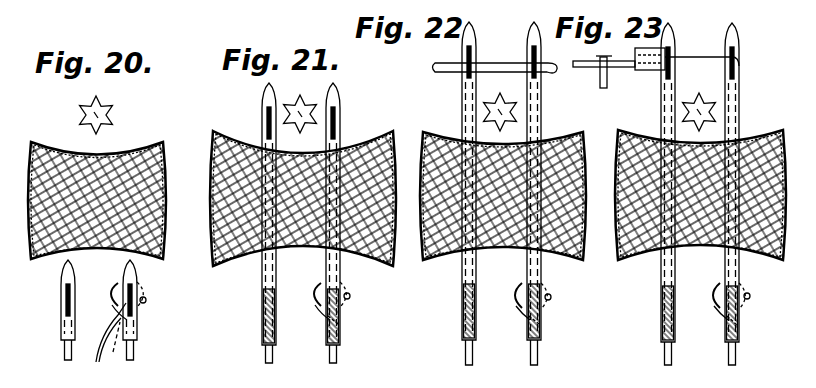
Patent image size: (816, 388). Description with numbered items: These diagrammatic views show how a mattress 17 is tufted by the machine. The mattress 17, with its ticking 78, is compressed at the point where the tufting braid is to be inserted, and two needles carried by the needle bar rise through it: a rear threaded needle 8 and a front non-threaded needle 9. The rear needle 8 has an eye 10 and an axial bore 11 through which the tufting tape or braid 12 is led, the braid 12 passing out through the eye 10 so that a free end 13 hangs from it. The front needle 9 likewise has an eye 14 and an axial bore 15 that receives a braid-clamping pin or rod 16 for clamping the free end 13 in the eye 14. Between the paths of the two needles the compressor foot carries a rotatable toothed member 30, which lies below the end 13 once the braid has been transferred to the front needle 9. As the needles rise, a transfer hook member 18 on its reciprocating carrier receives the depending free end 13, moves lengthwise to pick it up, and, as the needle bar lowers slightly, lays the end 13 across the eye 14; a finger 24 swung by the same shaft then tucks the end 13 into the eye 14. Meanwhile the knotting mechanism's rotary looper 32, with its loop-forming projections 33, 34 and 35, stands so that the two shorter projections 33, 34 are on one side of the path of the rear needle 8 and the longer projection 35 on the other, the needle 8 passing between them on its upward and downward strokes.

In FIG. 20, the rear threaded needle 8 is at (151, 310).
In FIG. 21, the rear threaded needle 8 is at (350, 223).
In FIG. 22, the rear threaded needle 8 is at (551, 193).
In FIG. 23, the rear threaded needle 8 is at (749, 194).
In FIG. 20, the front non-threaded needle 9 is at (48, 310).
In FIG. 21, the front non-threaded needle 9 is at (252, 223).
In FIG. 22, the front non-threaded needle 9 is at (451, 193).
In FIG. 23, the front non-threaded needle 9 is at (660, 194).
In FIG. 20, the eye 10 is at (140, 292).
In FIG. 21, the eye 10 is at (338, 121).
In FIG. 22, the eye 10 is at (540, 47).
In FIG. 23, the eye 10 is at (739, 55).
In FIG. 20, the axial bore 11 is at (115, 346).
In FIG. 21, the axial bore 11 is at (340, 323).
In FIG. 22, the axial bore 11 is at (542, 324).
In FIG. 23, the axial bore 11 is at (740, 326).
In FIG. 20, the tufting tape or braid 12 is at (136, 350).
In FIG. 21, the tufting tape or braid 12 is at (340, 347).
In FIG. 22, the tufting tape or braid 12 is at (540, 351).
In FIG. 23, the tufting tape or braid 12 is at (738, 353).
In FIG. 20, the free end 13 is at (96, 360).
In FIG. 23, the free end 13 is at (705, 57).
In FIG. 20, the eye 14 is at (63, 296).
In FIG. 21, the eye 14 is at (264, 112).
In FIG. 22, the eye 14 is at (465, 54).
In FIG. 23, the eye 14 is at (671, 57).
In FIG. 21, the axial bore 15 is at (263, 304).
In FIG. 23, the axial bore 15 is at (661, 306).
In FIG. 20, the braid-clamping pin or rod 16 is at (65, 350).
In FIG. 21, the braid-clamping pin or rod 16 is at (266, 349).
In FIG. 22, the braid-clamping pin or rod 16 is at (466, 351).
In FIG. 23, the braid-clamping pin or rod 16 is at (664, 353).
In FIG. 20, the mattress 17 is at (88, 200).
In FIG. 21, the mattress 17 is at (299, 203).
In FIG. 22, the mattress 17 is at (502, 198).
In FIG. 23, the mattress 17 is at (697, 201).
In FIG. 22, the transfer hook member 18 is at (497, 64).
In FIG. 23, the transfer hook member 18 is at (602, 76).
In FIG. 23, the finger 24 is at (650, 70).
In FIG. 20, the rotatable toothed member 30 is at (102, 119).
In FIG. 21, the rotatable toothed member 30 is at (301, 104).
In FIG. 22, the rotatable toothed member 30 is at (503, 105).
In FIG. 23, the rotatable toothed member 30 is at (700, 104).
In FIG. 20, the rotary looper 32 is at (143, 283).
In FIG. 21, the rotary looper 32 is at (348, 287).
In FIG. 22, the rotary looper 32 is at (546, 290).
In FIG. 23, the rotary looper 32 is at (745, 291).
In FIG. 20, the loop-forming projection 33 is at (115, 287).
In FIG. 21, the loop-forming projection 33 is at (319, 286).
In FIG. 22, the loop-forming projection 33 is at (520, 288).
In FIG. 23, the loop-forming projection 33 is at (718, 288).
In FIG. 20, the loop-forming projection 34 is at (120, 312).
In FIG. 21, the loop-forming projection 34 is at (322, 311).
In FIG. 22, the loop-forming projection 34 is at (521, 312).
In FIG. 23, the loop-forming projection 34 is at (720, 312).
In FIG. 20, the loop-forming projection 35 is at (146, 302).
In FIG. 21, the loop-forming projection 35 is at (350, 298).
In FIG. 22, the loop-forming projection 35 is at (552, 298).
In FIG. 23, the loop-forming projection 35 is at (750, 298).
In FIG. 20, the mattress ticking 78 is at (50, 257).
In FIG. 21, the mattress ticking 78 is at (236, 264).
In FIG. 22, the mattress ticking 78 is at (455, 257).
In FIG. 23, the mattress ticking 78 is at (651, 257).